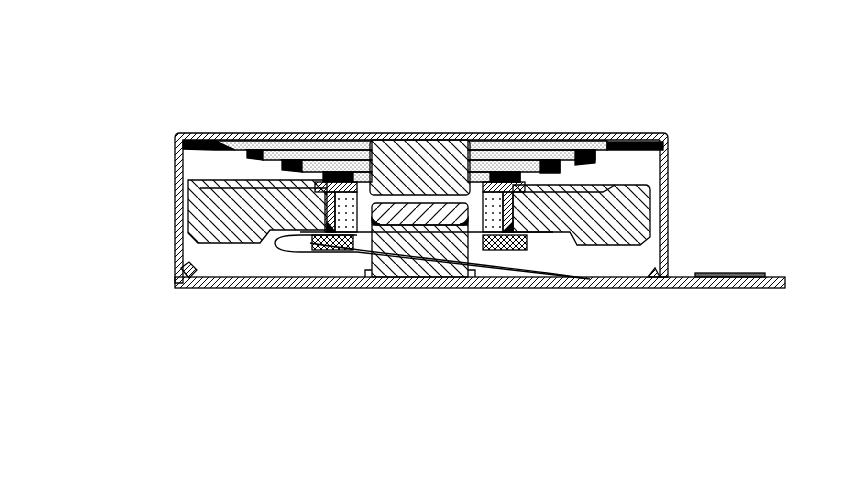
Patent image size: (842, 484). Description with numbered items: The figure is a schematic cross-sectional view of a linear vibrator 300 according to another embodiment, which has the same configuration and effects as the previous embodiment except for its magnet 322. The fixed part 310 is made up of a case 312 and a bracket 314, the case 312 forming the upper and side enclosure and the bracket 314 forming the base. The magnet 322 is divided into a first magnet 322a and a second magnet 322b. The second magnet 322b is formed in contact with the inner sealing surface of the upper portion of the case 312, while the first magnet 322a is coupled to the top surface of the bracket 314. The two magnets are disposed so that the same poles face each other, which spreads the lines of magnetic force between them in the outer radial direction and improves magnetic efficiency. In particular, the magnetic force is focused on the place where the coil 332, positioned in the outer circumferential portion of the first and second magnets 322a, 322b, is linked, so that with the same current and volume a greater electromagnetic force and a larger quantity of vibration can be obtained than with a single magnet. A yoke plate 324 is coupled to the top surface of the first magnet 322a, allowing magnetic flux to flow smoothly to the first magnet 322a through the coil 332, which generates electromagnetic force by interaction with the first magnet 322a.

The linear vibrator 300 is at (272, 26).
The fixed part 310 is at (70, 231).
The case 312 is at (176, 247).
The bracket 314 is at (180, 284).
The magnet 322 is at (573, 50).
The first magnet 322a is at (480, 230).
The second magnet 322b is at (446, 155).
The yoke plate 324 is at (430, 213).
The coil 332 is at (347, 236).